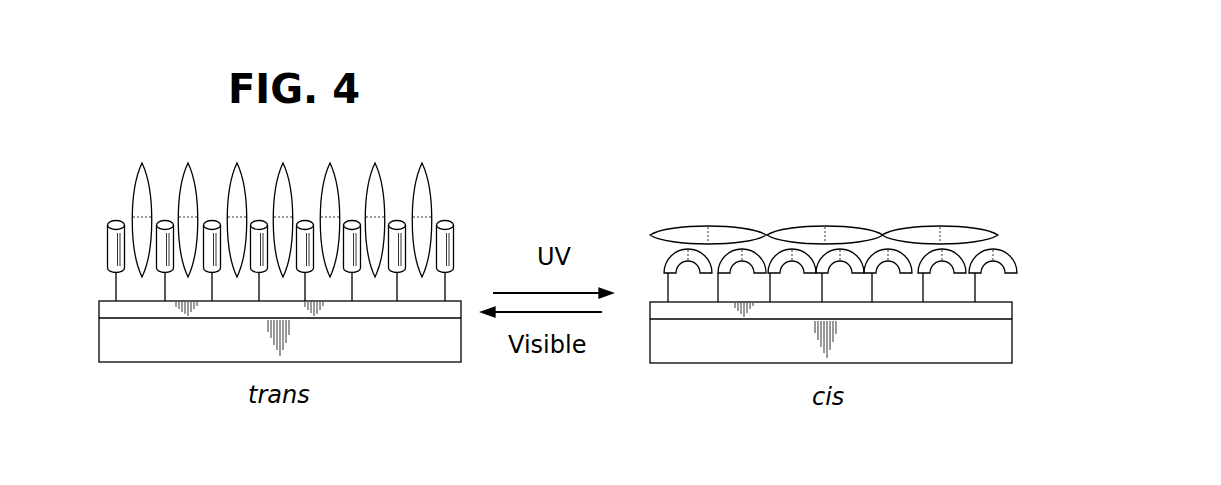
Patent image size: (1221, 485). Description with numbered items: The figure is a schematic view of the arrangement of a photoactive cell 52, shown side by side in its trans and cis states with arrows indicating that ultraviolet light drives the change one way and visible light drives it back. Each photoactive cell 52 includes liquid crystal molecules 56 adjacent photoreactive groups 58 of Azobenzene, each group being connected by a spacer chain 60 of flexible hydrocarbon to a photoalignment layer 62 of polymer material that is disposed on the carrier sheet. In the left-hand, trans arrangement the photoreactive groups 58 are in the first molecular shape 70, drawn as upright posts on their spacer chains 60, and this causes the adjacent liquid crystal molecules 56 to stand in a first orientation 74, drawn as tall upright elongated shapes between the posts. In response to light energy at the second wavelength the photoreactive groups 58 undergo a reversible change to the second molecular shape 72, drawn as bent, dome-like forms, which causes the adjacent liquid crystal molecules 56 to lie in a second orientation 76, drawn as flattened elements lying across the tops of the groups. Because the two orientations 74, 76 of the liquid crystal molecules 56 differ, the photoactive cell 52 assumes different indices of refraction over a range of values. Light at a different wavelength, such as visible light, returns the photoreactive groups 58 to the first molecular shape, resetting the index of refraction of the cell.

The photoactive cell 52 is at (1040, 215).
The liquid crystal molecule 56 is at (181, 172).
The photoreactive group 58 is at (108, 234).
The spacer chain 60 is at (116, 292).
The photoalignment layer 62 is at (99, 311).
The first molecular shape 70 is at (453, 236).
The second molecular shape 72 is at (1012, 258).
The first orientation 74 is at (422, 167).
The second orientation 76 is at (827, 226).